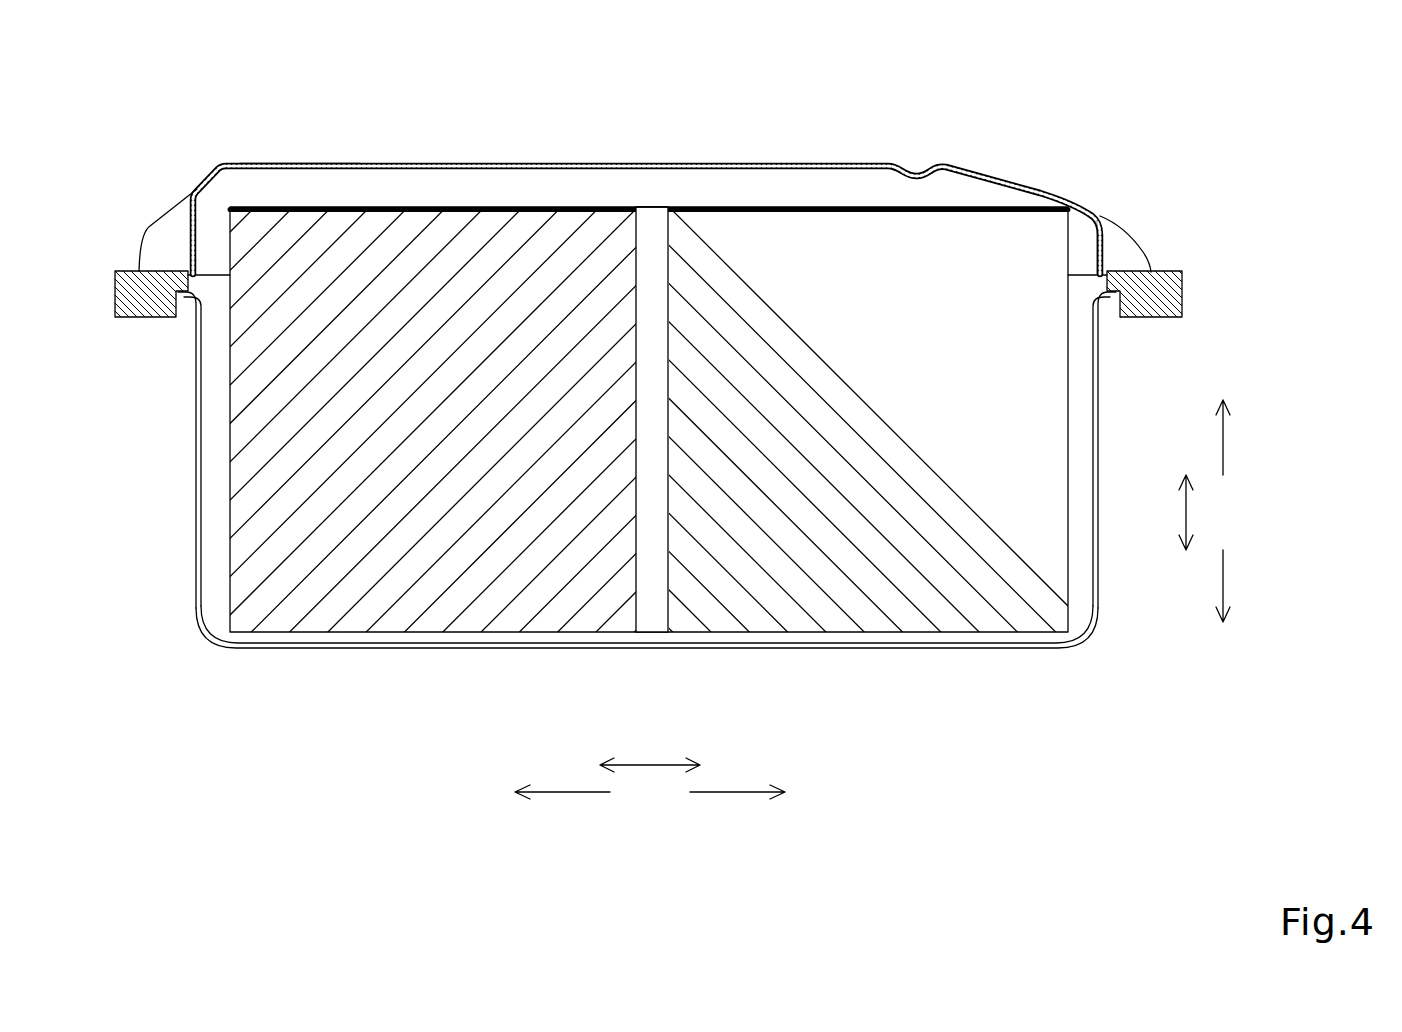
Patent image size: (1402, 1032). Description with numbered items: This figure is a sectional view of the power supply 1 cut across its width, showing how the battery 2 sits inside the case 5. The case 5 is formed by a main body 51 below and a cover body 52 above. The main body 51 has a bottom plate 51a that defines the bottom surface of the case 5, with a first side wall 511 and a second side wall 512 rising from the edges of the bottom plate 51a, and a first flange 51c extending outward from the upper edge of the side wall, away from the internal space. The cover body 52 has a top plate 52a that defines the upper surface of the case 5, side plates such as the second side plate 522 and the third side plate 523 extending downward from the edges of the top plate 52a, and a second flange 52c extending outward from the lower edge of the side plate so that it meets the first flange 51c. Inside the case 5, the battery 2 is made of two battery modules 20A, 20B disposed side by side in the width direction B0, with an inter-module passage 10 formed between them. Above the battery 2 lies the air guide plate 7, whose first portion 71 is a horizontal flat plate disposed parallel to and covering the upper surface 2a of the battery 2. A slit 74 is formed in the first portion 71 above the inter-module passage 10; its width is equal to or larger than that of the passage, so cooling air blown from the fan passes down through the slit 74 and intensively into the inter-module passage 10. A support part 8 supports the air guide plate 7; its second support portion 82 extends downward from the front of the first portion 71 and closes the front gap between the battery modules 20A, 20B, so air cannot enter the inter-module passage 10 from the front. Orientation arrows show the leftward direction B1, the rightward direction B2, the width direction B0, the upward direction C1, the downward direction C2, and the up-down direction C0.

The power supply 1 is at (355, 92).
The battery 2 is at (214, 524).
The upper surface 2a is at (848, 208).
The case 5 is at (897, 666).
The main body 51 is at (777, 666).
The first side wall 511 is at (195, 437).
The second side wall 512 is at (1100, 440).
The bottom plate 51a is at (362, 652).
The first flange 51c is at (1152, 320).
The cover body 52 is at (746, 150).
The top plate 52a is at (298, 163).
The second side plate 522 is at (1105, 240).
The third side plate 523 is at (190, 230).
The second flange 52c is at (1142, 258).
The air guide plate 7 is at (457, 189).
The first portion 71 is at (548, 205).
The slit 74 is at (650, 205).
The inter-module passage 10 is at (651, 254).
The battery module 20A is at (445, 612).
The battery module 20B is at (985, 612).
The second support portion 82 is at (652, 615).
The support part 8 is at (652, 419).
The width direction B0 is at (655, 768).
The arrow B1 is at (578, 795).
The arrow B2 is at (730, 795).
The up-down direction C0 is at (1190, 510).
The arrow C1 is at (1225, 440).
The arrow C2 is at (1230, 580).